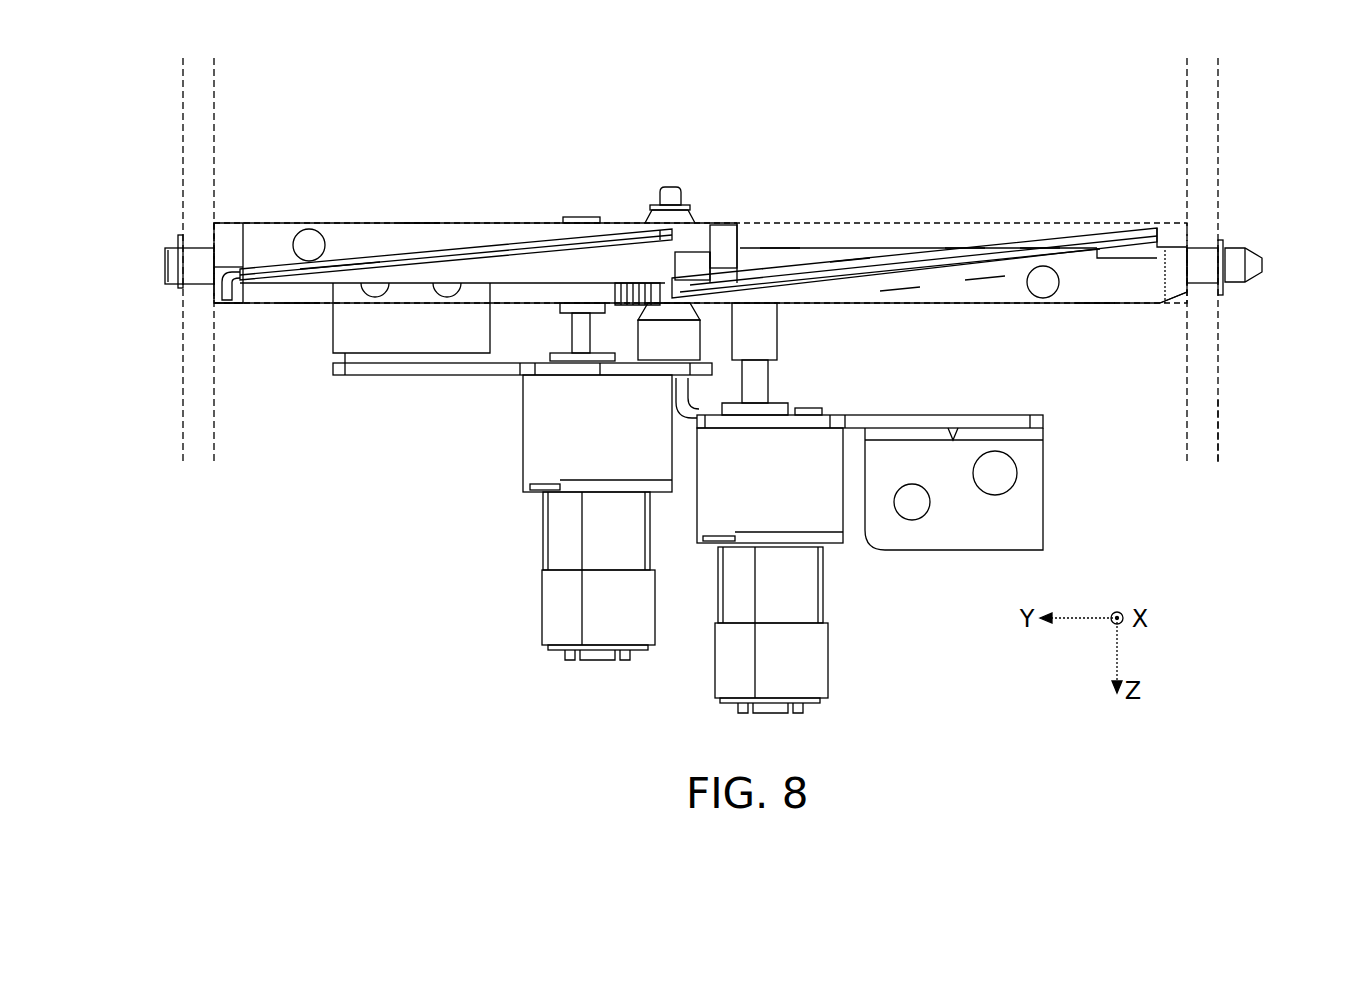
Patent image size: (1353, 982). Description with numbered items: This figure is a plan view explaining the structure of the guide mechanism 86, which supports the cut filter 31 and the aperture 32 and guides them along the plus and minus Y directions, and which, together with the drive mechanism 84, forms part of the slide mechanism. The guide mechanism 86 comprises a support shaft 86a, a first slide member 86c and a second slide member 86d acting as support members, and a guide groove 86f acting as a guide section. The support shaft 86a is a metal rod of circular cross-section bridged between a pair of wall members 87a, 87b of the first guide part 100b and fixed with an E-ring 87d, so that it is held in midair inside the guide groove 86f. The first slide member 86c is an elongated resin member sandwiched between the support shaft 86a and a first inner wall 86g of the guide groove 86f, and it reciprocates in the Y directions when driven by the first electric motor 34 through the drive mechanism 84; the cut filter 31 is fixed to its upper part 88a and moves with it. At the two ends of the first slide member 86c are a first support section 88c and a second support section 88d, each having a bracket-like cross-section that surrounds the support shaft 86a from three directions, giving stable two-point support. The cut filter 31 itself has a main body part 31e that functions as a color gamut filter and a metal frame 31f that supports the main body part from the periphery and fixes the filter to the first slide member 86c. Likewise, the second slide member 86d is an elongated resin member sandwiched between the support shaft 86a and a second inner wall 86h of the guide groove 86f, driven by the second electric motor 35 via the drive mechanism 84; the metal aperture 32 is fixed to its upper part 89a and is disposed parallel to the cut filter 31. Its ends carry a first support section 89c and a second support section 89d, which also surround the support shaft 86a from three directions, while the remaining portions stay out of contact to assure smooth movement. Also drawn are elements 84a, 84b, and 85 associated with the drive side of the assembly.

The cut filter 31 is at (908, 222).
The main body part 31e is at (895, 290).
The metal frame 31f is at (848, 222).
The aperture 32 is at (535, 222).
The first electric motor 34 is at (735, 660).
The second electric motor 35 is at (555, 605).
The drive mechanism 84 is at (438, 390).
The bracket box 84a is at (825, 513).
The bracket box 84b is at (548, 405).
The mounting plate 85 is at (1030, 510).
The guide mechanism 86 is at (1033, 170).
The support shaft 86a is at (775, 222).
The first slide member 86c is at (1093, 290).
The second slide member 86d is at (420, 222).
The guide groove 86f is at (962, 222).
The first inner wall 86g is at (295, 300).
The second inner wall 86h is at (1040, 225).
The wall member 87a is at (1220, 130).
The wall member 87b is at (183, 140).
The E-ring 87d is at (178, 240).
The upper part 88a is at (985, 285).
The first support section 88c is at (1170, 303).
The second support section 88d is at (700, 222).
The upper part 89a is at (340, 222).
The first support section 89c is at (232, 222).
The second support section 89d is at (745, 222).
The first guide part 100b is at (1220, 450).